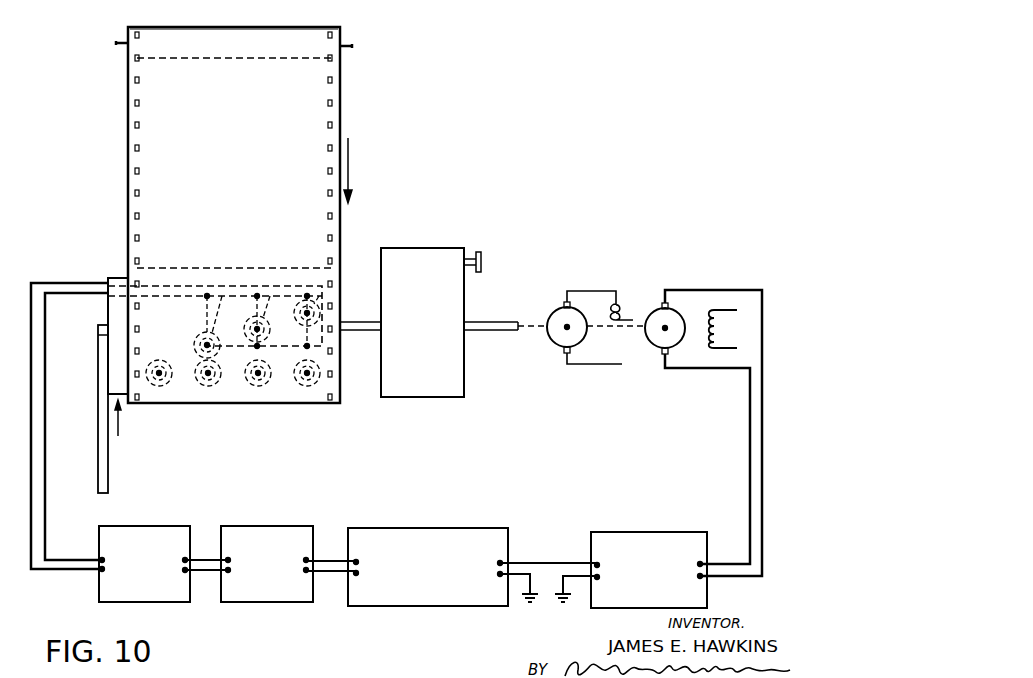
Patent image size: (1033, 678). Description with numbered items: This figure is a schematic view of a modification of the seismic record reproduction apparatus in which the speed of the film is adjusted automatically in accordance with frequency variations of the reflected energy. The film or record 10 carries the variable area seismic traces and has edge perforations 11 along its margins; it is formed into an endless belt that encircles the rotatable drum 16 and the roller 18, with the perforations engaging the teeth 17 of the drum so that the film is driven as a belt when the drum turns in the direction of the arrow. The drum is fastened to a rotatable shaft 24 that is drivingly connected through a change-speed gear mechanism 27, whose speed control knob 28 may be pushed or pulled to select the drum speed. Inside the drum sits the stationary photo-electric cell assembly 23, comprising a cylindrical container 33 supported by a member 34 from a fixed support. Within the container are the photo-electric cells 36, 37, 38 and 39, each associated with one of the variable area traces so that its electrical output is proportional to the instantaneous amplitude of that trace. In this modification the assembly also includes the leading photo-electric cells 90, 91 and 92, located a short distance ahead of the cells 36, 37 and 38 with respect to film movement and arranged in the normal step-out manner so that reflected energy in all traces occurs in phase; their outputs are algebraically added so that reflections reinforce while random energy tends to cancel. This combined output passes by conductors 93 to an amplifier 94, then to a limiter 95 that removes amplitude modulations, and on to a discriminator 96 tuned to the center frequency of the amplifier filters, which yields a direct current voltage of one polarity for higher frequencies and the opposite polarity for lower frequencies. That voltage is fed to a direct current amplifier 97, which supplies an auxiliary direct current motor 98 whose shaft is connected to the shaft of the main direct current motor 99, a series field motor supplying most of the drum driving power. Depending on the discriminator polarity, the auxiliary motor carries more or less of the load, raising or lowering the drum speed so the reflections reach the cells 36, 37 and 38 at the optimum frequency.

The film or record 10 is at (340, 109).
The edge perforations 11 is at (333, 88).
The rotatable drum 16 is at (243, 268).
The teeth 17 is at (336, 376).
The roller 18 is at (307, 31).
The photo-electric cell assembly 23 is at (128, 424).
The rotatable shaft 24 is at (368, 321).
The change-speed gear mechanism 27 is at (437, 250).
The speed control knob 28 is at (481, 257).
The cylindrical container 33 is at (116, 278).
The member 34 is at (100, 440).
The photo-electric cell 36 is at (311, 386).
The photo-electric cell 37 is at (262, 386).
The photo-electric cell 38 is at (212, 386).
The photo-electric cell 39 is at (163, 386).
The leading photo-electric cell 90 is at (320, 292).
The leading photo-electric cell 91 is at (271, 292).
The leading photo-electric cell 92 is at (223, 292).
The conductors 93 is at (86, 568).
The amplifier 94 is at (124, 538).
The limiter 95 is at (243, 538).
The discriminator 96 is at (445, 539).
The direct current amplifier 97 is at (662, 541).
The auxiliary direct current motor 98 is at (672, 304).
The main direct current motor 99 is at (560, 306).